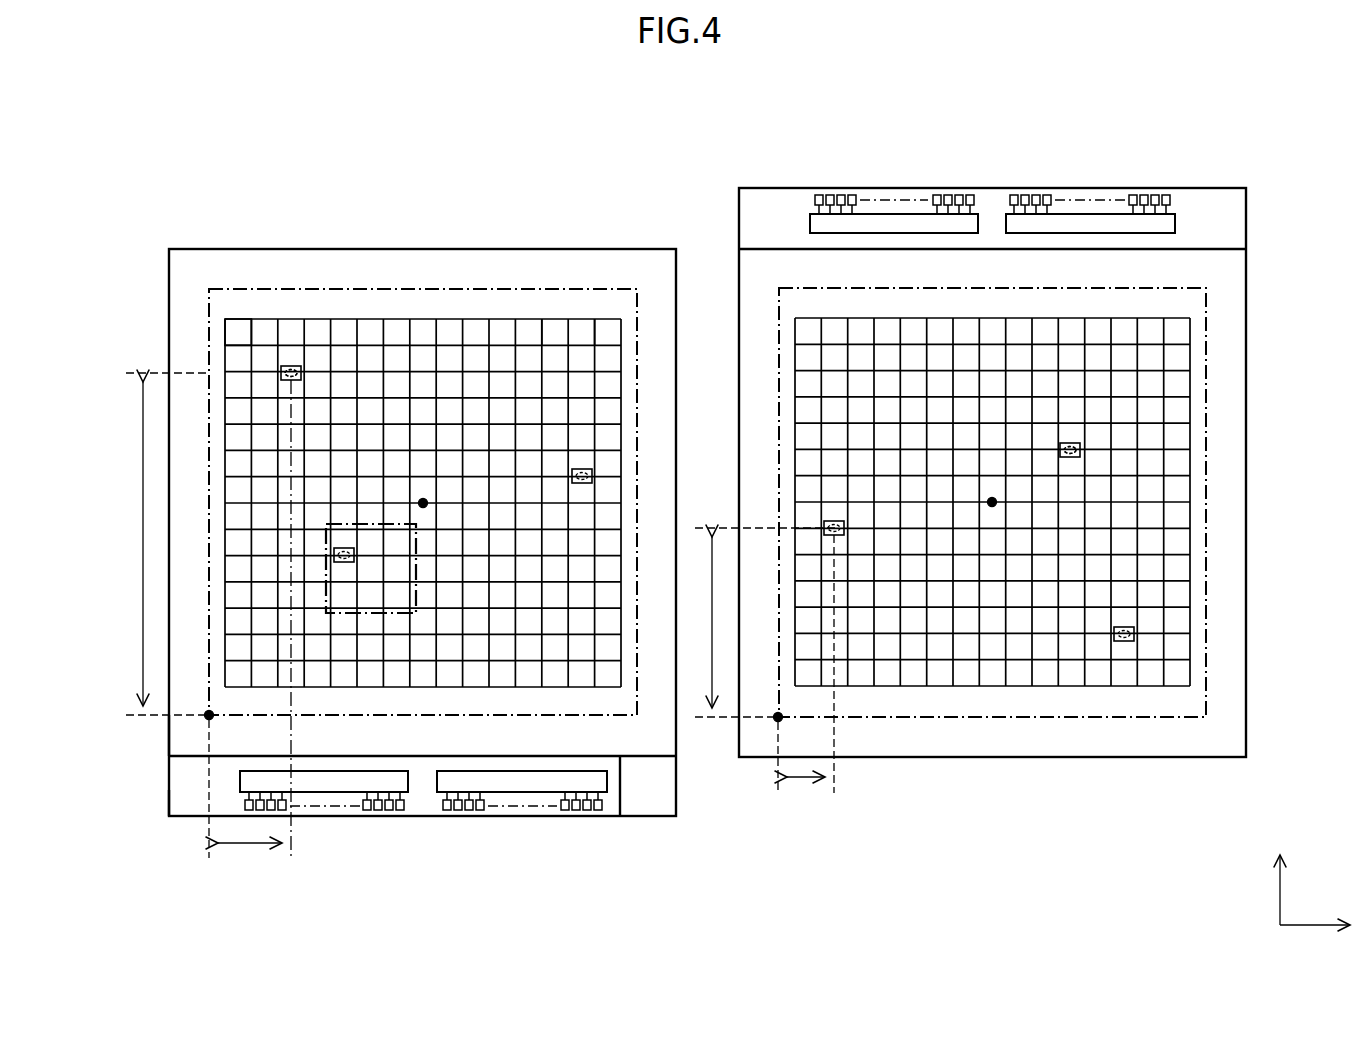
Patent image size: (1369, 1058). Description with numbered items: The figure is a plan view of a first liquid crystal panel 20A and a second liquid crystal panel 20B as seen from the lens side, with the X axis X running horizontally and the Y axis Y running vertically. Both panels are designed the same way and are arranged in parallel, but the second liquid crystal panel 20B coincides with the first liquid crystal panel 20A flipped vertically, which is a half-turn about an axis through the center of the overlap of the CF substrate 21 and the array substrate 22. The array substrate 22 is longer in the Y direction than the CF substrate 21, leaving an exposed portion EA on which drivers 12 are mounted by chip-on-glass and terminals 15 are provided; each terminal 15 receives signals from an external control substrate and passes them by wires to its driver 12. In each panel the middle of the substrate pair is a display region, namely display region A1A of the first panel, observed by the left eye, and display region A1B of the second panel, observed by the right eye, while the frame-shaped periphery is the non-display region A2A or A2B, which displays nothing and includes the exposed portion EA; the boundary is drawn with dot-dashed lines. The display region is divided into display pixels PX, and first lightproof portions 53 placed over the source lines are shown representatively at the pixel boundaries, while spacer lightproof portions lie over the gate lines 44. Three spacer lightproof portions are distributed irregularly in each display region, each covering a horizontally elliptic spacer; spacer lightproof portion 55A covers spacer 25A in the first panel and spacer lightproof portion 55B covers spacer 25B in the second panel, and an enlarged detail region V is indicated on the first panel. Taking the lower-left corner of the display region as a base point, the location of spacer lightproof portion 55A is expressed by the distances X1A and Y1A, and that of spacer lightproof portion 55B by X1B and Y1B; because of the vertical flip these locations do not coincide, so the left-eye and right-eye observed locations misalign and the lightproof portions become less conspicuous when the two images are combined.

The first liquid crystal panel 20A is at (484, 195).
The second liquid crystal panel 20B is at (1009, 152).
The display region of first liquid crystal panel A1A is at (317, 305).
The non-display region of first liquid crystal panel A2A is at (252, 270).
The display region of second liquid crystal panel A1B is at (1190, 303).
The non-display region of second liquid crystal panel A2B is at (1229, 324).
The spacer lightproof portion of first liquid crystal panel 55A is at (301, 371).
The spacer of first liquid crystal panel 25A is at (300, 380).
The spacer lightproof portion of second liquid crystal panel 55B is at (1080, 444).
The spacer of second liquid crystal panel 25B is at (1082, 457).
The first lightproof portion 53 is at (543, 338).
The gate line 44 is at (605, 343).
The display pixel PX is at (238, 333).
The CF substrate 21 is at (185, 737).
The array substrate 22 is at (188, 795).
The driver 12 is at (512, 782).
The terminal 15 is at (600, 808).
The exposed portion EA is at (644, 787).
The imaging region V is at (400, 613).
The Y-axis distance of spacer lightproof portion of first panel Y1A is at (165, 544).
The X-axis distance of spacer lightproof portion of first panel X1A is at (245, 799).
The Y-axis distance of spacer lightproof portion of second panel Y1B is at (765, 622).
The X-axis distance of spacer lightproof portion of second panel X1B is at (806, 674).
The X-axis direction X is at (1324, 924).
The Y-axis direction Y is at (1279, 870).